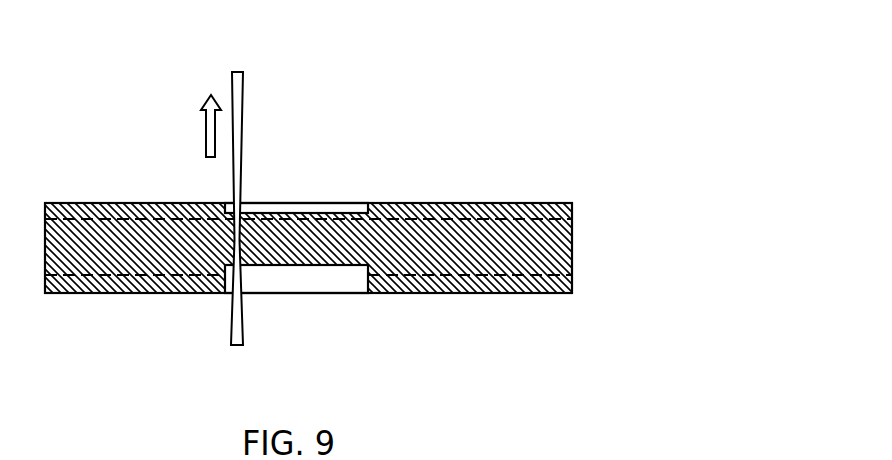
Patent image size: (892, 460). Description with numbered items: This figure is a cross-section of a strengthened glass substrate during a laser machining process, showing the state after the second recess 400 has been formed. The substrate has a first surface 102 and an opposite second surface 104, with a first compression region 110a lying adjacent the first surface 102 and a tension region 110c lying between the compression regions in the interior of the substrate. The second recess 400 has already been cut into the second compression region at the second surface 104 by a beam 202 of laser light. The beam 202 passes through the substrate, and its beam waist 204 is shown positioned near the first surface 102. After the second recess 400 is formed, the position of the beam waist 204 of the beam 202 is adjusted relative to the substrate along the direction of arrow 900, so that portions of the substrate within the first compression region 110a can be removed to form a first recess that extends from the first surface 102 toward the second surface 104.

The first surface 102 is at (138, 200).
The second surface 104 is at (128, 296).
The first compression region 110a is at (167, 213).
The tension region 110c is at (188, 235).
The beam of laser light 202 is at (243, 97).
The beam waist 204 is at (243, 206).
The second recess 400 is at (353, 290).
The arrow 900 is at (207, 100).